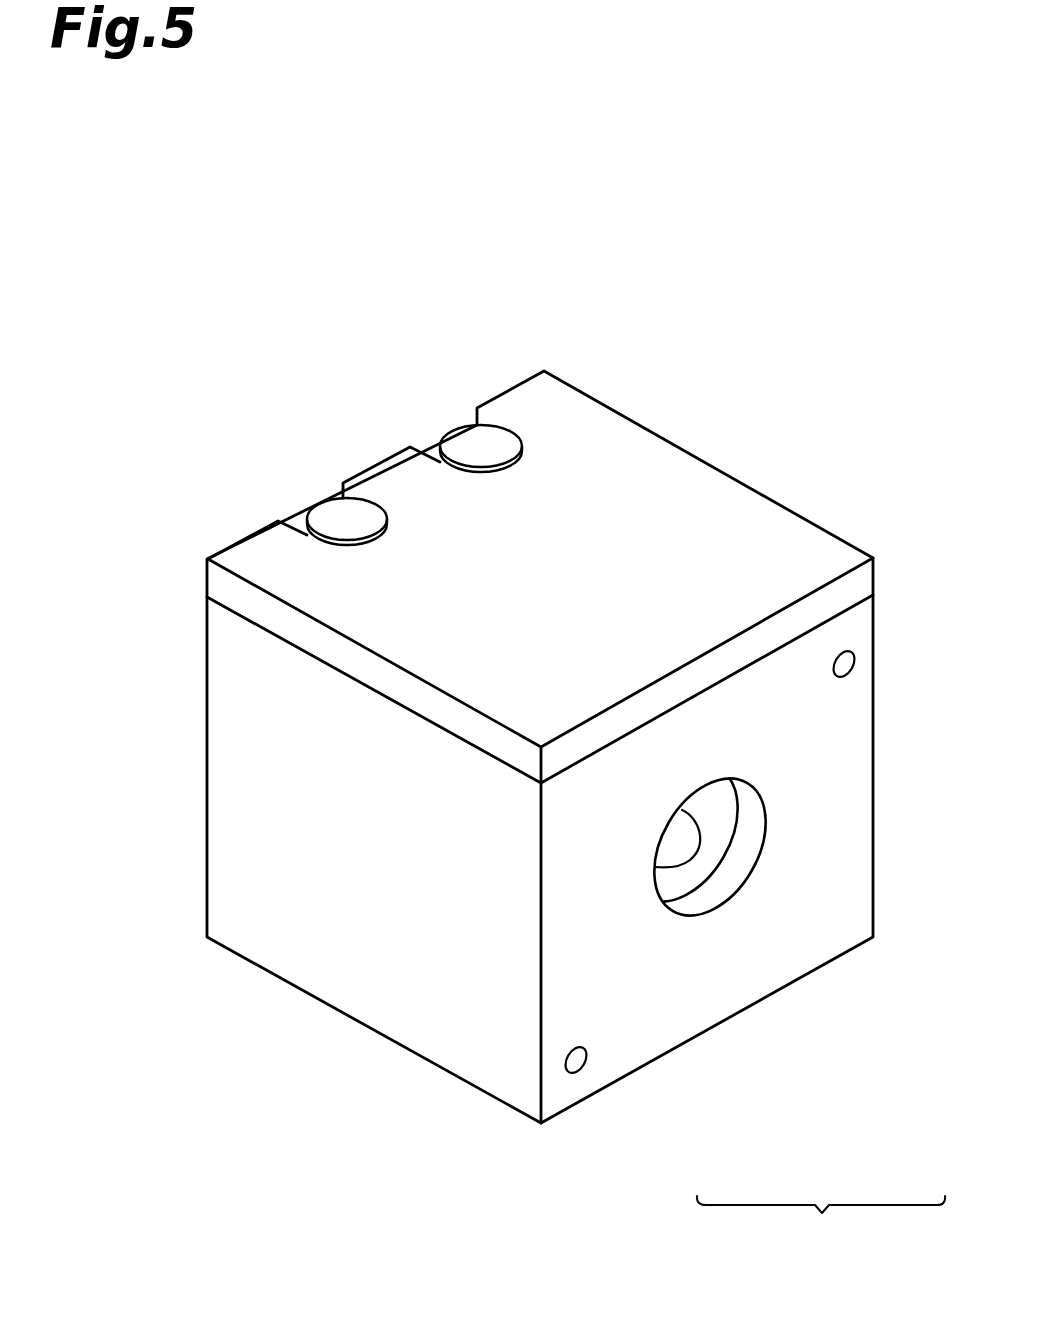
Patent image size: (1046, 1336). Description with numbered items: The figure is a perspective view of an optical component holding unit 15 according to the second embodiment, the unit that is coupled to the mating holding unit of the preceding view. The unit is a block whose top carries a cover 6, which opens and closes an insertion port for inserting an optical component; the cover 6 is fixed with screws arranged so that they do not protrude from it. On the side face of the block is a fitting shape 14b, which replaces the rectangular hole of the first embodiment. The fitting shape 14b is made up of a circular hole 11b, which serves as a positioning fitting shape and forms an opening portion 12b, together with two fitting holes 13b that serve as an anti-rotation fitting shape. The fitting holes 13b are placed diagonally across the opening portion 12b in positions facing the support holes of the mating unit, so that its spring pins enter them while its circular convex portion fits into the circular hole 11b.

The optical component holding unit 15 is at (287, 260).
The cover 6 is at (722, 532).
The circular hole 11b is at (718, 885).
The opening portion 12b is at (668, 858).
The fitting holes 13b is at (586, 1068).
The fitting shape 14b is at (821, 1233).